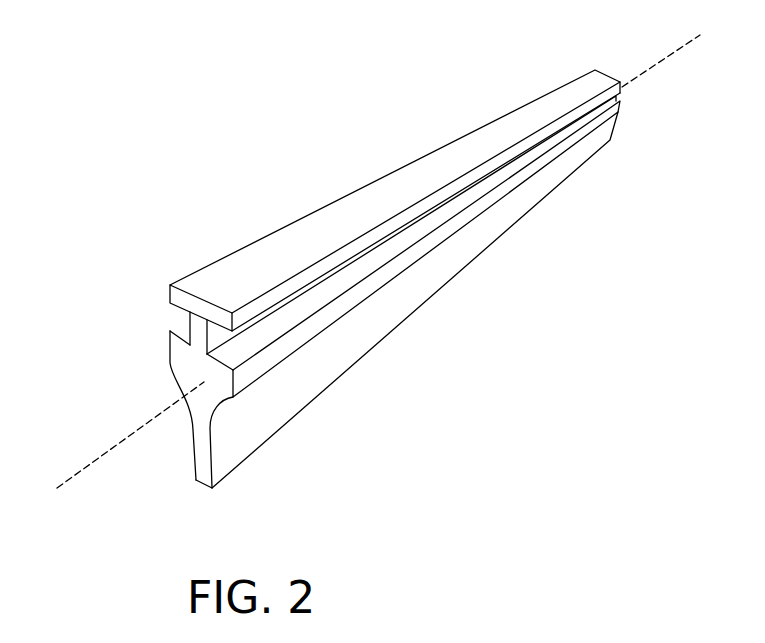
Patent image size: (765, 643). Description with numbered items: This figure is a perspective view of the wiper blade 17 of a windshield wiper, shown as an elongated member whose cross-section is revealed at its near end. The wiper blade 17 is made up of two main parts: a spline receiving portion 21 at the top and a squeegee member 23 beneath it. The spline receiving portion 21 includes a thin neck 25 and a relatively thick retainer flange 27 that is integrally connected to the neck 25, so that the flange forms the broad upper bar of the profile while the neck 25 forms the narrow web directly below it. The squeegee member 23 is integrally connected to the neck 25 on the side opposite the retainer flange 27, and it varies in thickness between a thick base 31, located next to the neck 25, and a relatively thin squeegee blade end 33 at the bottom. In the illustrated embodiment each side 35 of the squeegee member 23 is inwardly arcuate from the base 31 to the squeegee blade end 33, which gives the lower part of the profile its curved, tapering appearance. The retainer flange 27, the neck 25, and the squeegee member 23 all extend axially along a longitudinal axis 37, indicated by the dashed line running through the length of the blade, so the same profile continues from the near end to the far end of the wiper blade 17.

The wiper blade 17 is at (216, 212).
The spline receiving portion 21 is at (298, 307).
The squeegee member 23 is at (194, 393).
The neck 25 is at (197, 320).
The retainer flange 27 is at (178, 293).
The base 31 is at (229, 393).
The squeegee blade end 33 is at (200, 489).
The side 35 is at (301, 386).
The longitudinal axis 37 is at (70, 478).